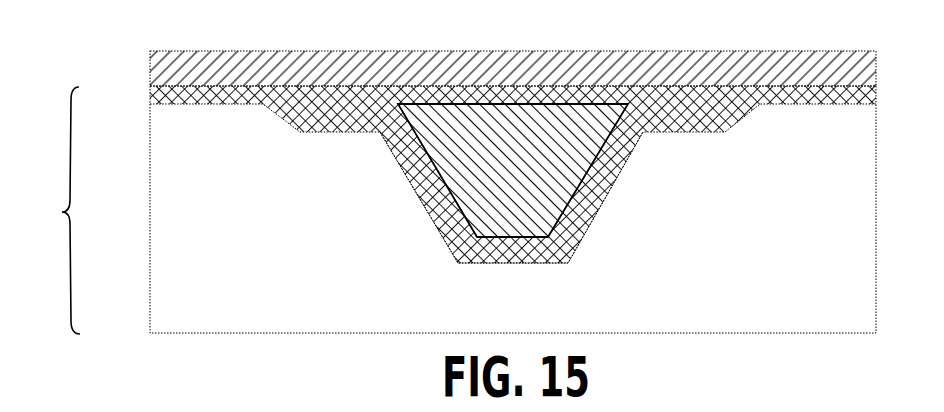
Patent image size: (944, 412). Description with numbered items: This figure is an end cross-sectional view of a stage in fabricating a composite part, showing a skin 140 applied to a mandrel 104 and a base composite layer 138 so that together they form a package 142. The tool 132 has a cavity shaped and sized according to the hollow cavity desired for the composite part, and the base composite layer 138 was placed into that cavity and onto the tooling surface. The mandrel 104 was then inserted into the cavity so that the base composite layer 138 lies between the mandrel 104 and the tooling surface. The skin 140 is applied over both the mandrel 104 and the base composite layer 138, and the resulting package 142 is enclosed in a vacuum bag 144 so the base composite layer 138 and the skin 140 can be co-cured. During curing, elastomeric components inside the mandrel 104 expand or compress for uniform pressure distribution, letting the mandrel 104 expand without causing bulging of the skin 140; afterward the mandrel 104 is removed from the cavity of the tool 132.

The mandrel 104 is at (483, 104).
The tool 132 is at (151, 209).
The base composite layer 138 is at (370, 104).
The skin 140 is at (283, 96).
The package 142 is at (52, 210).
The vacuum bag 144 is at (177, 48).